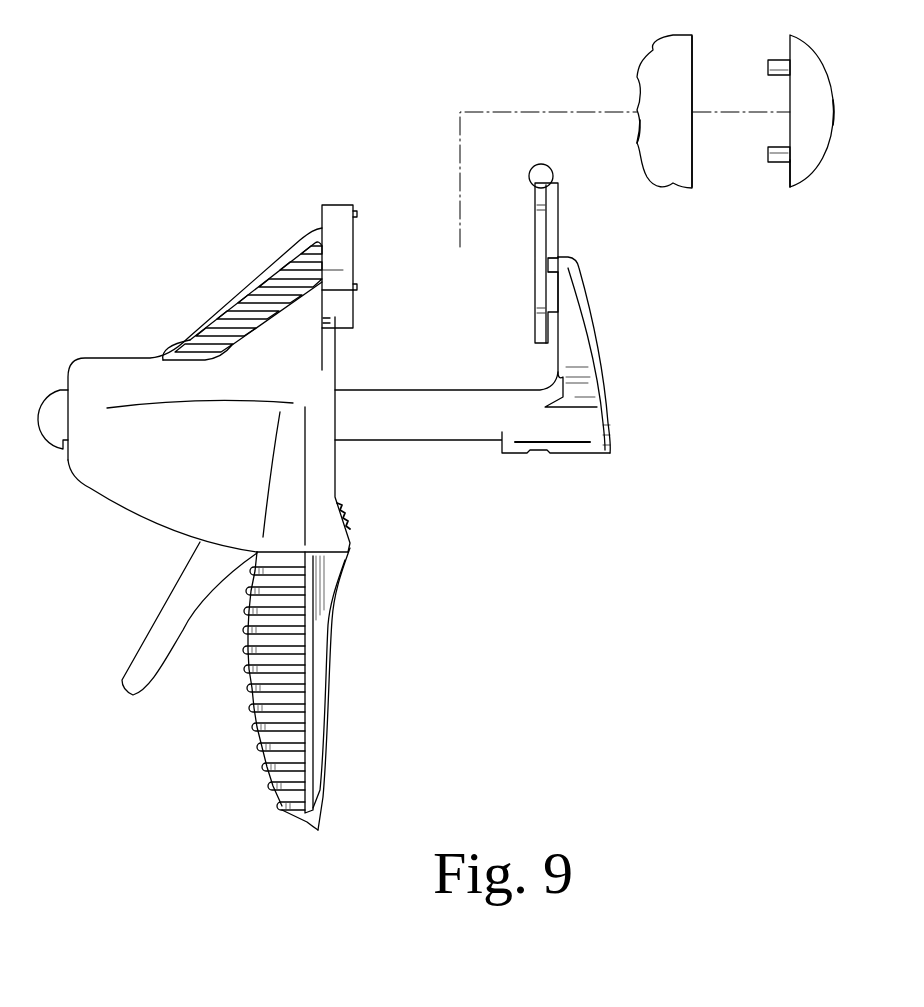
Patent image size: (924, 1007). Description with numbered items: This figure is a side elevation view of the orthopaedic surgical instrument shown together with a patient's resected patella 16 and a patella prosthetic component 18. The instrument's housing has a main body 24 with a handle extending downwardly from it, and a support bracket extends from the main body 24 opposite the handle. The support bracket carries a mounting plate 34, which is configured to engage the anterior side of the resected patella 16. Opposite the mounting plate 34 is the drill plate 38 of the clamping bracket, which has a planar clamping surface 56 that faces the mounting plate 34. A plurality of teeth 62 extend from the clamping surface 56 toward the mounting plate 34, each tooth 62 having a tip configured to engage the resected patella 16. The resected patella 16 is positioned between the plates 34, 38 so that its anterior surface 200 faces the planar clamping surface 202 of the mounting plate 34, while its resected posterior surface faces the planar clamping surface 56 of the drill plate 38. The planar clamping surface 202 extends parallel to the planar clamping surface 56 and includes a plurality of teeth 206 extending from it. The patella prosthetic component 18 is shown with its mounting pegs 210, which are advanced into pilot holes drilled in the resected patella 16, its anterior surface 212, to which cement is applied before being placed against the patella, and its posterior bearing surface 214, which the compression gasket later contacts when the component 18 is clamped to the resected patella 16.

The resected patella 16 is at (622, 80).
The patella prosthetic component 18 is at (848, 98).
The main body 24 is at (693, 175).
The mounting plate 34 is at (335, 205).
The drill plate 38 is at (548, 190).
The planar clamping surface 56 is at (553, 176).
The teeth 62 is at (537, 206).
The anterior surface 200 is at (637, 134).
The planar clamping surface 202 is at (355, 318).
The teeth 206 is at (355, 214).
The mounting pegs 210 is at (768, 66).
The anterior surface 212 is at (790, 185).
The posterior bearing surface 214 is at (830, 151).